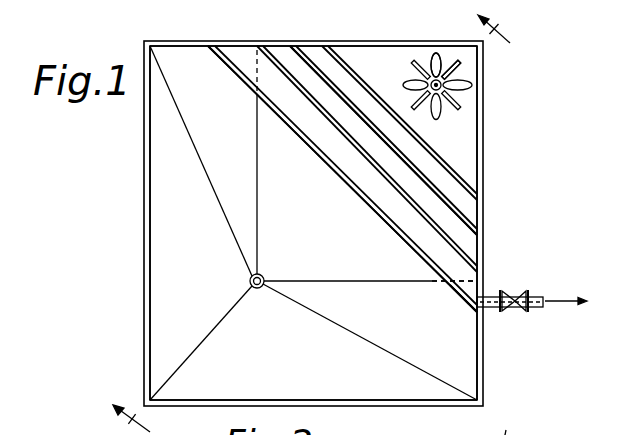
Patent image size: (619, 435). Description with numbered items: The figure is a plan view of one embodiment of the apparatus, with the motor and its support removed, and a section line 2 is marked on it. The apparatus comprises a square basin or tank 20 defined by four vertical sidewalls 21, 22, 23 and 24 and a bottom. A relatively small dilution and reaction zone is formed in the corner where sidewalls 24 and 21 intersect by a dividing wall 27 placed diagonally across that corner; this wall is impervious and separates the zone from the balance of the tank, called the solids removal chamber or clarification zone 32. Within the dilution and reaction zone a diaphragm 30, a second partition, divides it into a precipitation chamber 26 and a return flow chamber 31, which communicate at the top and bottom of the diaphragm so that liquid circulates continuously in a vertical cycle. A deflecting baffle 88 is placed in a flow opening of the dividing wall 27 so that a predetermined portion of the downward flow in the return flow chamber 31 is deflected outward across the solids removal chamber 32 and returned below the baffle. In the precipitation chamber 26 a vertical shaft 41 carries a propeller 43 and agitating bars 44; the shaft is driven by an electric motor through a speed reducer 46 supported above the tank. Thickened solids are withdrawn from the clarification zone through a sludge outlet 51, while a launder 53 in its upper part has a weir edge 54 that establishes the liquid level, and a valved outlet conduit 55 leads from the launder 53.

The section line arrows 2 is at (318, 225).
The tank 20 is at (483, 133).
The vertical sidewall 21 is at (483, 220).
The vertical sidewall 22 is at (301, 403).
The vertical sidewall 23 is at (147, 239).
The vertical sidewall 24 is at (353, 41).
The precipitation chamber 26 is at (466, 159).
The dividing wall 27 is at (262, 53).
The diaphragm 30 is at (369, 88).
The return flow chamber 31 is at (395, 143).
The solids removal chamber 32 is at (184, 53).
The shaft 41 is at (444, 87).
The propeller 43 is at (433, 52).
The agitating bars 44 is at (458, 62).
The speed reducer 46 is at (508, 422).
The sludge outlet 51 is at (249, 281).
The launder 53 is at (470, 278).
The weir edge 54 is at (451, 283).
The valved outlet conduit 55 is at (531, 307).
The deflecting baffle 88 is at (447, 200).